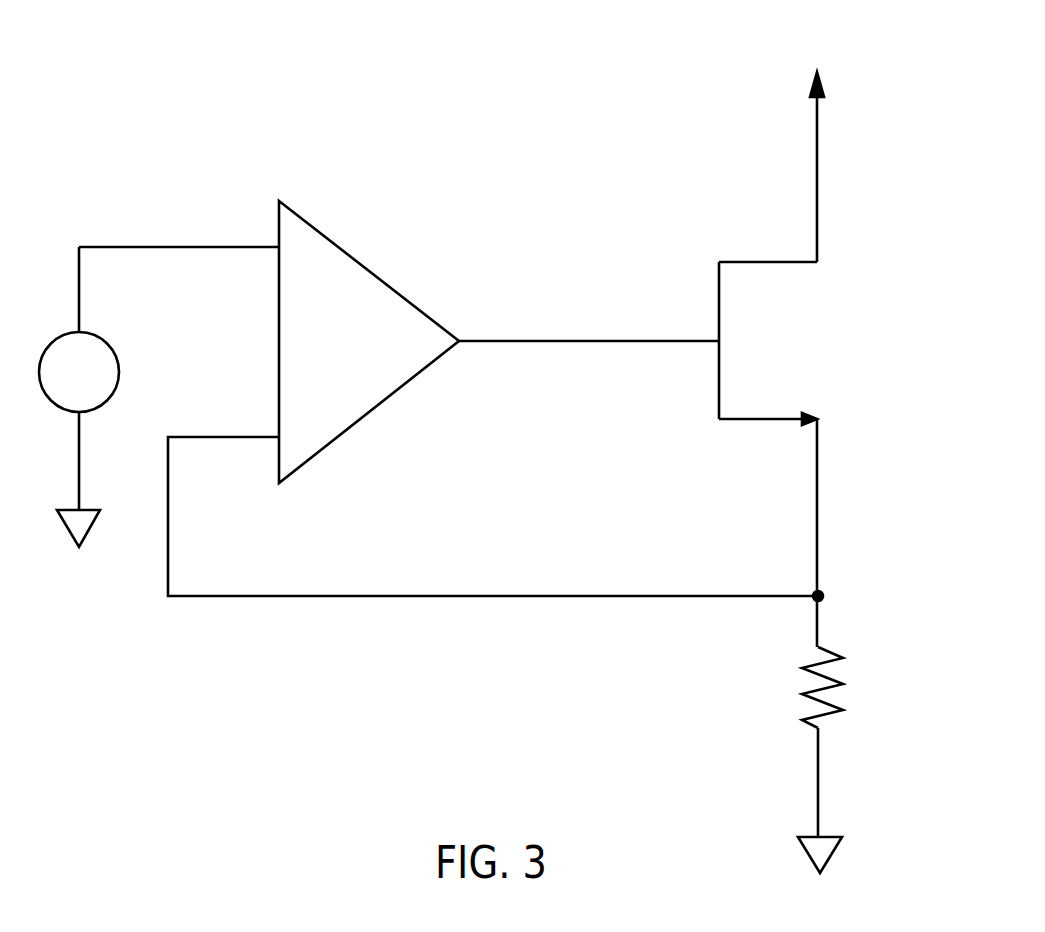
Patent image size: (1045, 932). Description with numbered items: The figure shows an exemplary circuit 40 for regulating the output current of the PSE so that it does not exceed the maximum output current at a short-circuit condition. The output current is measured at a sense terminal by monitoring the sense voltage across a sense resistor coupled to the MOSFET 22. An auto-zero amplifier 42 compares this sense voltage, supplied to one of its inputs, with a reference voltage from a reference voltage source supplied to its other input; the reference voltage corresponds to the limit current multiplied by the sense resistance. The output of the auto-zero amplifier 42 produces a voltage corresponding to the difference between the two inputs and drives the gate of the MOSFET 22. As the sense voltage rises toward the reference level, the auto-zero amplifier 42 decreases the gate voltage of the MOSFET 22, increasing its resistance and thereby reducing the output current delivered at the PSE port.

The circuit 40 is at (518, 209).
The auto-zero amplifier 42 is at (333, 238).
The MOSFET 22 is at (750, 261).